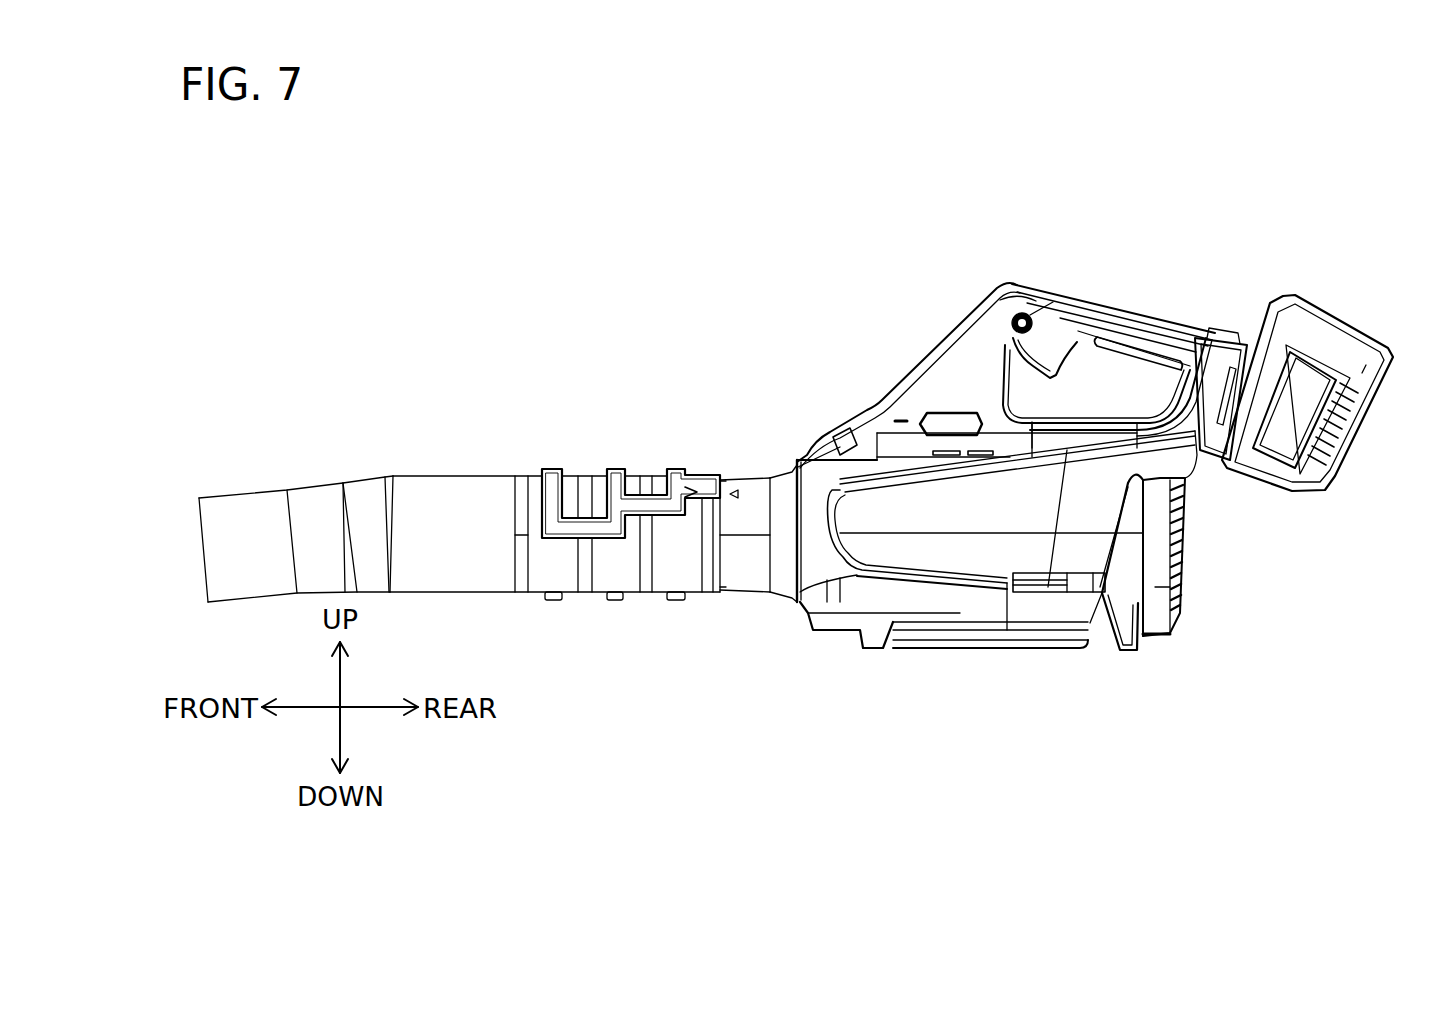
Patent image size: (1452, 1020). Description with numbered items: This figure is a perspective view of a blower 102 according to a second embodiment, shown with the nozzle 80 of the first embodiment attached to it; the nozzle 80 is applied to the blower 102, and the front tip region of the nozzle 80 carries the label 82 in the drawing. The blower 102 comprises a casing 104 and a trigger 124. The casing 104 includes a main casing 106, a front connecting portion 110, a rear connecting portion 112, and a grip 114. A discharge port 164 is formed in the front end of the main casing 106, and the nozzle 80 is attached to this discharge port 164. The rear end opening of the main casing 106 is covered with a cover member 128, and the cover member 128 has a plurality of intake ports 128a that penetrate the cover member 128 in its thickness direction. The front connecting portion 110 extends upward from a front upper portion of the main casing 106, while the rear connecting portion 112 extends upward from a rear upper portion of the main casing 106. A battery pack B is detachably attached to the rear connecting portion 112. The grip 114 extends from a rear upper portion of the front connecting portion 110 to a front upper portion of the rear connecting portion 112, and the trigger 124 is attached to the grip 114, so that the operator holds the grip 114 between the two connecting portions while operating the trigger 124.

The nozzle 80 is at (521, 445).
The nozzle 82 is at (432, 483).
The blower 102 is at (1272, 217).
The casing 104 is at (892, 372).
The main casing 106 is at (1047, 613).
The front connecting portion 110 is at (957, 365).
The rear connecting portion 112 is at (1223, 355).
The grip 114 is at (1103, 308).
The trigger 124 is at (1040, 355).
The cover member 128 is at (1185, 592).
The intake ports 128a is at (1187, 538).
The discharge port 164 is at (782, 467).
The battery pack B is at (1360, 352).